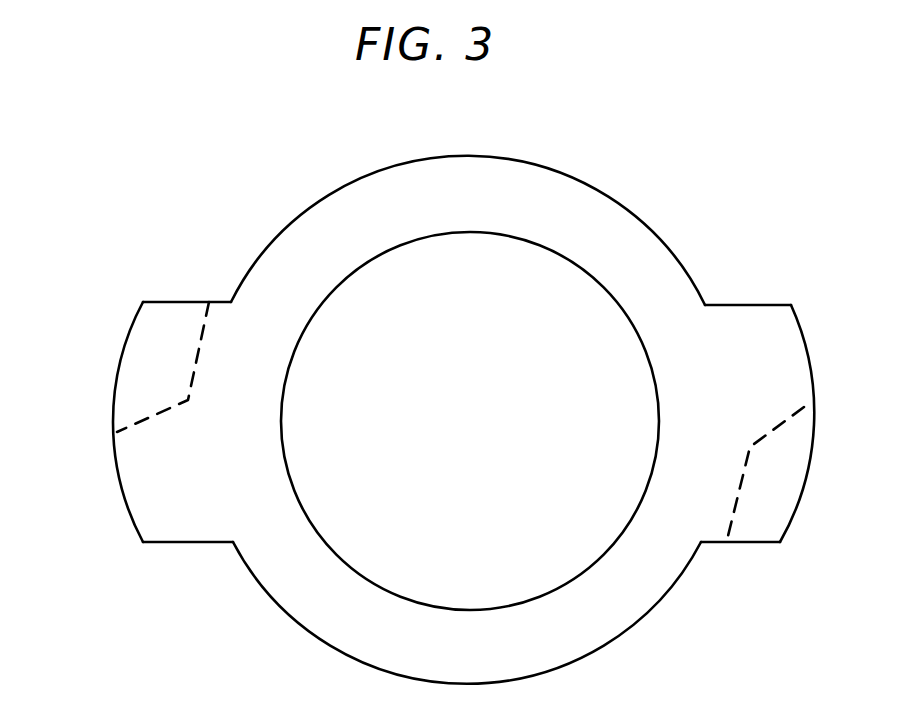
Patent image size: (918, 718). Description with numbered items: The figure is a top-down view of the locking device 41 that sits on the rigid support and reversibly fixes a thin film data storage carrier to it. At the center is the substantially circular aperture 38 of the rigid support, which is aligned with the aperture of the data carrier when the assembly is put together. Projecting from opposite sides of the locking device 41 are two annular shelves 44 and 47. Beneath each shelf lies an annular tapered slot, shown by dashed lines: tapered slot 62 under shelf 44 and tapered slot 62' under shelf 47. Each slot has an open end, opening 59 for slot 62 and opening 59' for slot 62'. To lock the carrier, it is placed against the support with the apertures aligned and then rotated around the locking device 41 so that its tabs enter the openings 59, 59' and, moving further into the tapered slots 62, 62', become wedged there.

The aperture 38 is at (487, 427).
The locking device 41 is at (503, 153).
The shelf 44 is at (787, 327).
The shelf 47 is at (130, 473).
The opening 59 is at (740, 574).
The opening 59' is at (187, 261).
The tapered slot 62 is at (765, 473).
The tapered slot 62' is at (163, 367).